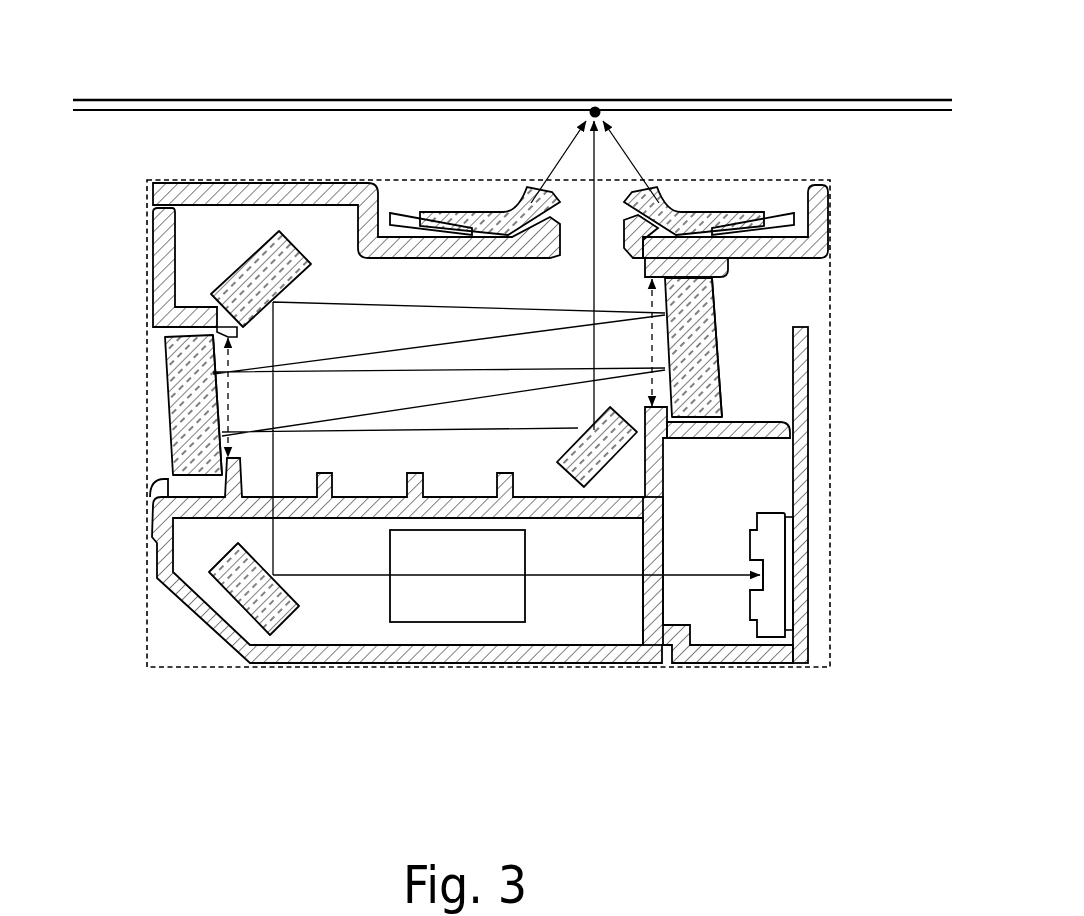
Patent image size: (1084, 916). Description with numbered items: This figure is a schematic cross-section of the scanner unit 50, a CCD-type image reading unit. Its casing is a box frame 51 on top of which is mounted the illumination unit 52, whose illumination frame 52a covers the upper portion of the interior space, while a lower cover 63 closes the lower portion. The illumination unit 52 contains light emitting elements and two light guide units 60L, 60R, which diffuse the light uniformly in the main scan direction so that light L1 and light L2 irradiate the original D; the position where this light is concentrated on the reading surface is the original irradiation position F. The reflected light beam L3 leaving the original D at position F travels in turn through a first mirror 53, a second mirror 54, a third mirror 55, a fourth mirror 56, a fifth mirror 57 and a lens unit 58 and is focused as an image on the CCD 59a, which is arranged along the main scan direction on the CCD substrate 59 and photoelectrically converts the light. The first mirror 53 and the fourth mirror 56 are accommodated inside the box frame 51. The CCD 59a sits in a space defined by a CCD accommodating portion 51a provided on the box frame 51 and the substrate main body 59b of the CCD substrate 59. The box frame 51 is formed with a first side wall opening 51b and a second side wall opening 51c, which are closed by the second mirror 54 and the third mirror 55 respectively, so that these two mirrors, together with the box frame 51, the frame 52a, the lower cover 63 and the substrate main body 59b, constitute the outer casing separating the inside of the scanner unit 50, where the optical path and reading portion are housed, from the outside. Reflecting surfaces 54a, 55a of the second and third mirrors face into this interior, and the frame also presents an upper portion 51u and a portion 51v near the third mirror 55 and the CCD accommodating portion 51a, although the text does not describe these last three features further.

The scanner unit 50 is at (824, 672).
The box frame 51 is at (146, 531).
The CCD accommodating portion 51a is at (664, 488).
The first side wall opening 51b is at (253, 397).
The second side wall opening 51c is at (628, 342).
The upper housing portion 51u is at (163, 481).
The shelf portion 51v is at (770, 421).
The illumination unit 52 is at (832, 208).
The illumination frame 52a is at (258, 188).
The first mirror 53 is at (613, 466).
The second mirror 54 is at (170, 417).
The lens surface 54a is at (170, 381).
The third mirror 55 is at (722, 388).
The lens surface 55a is at (722, 322).
The fourth mirror 56 is at (243, 262).
The fifth mirror 57 is at (237, 600).
The lens unit 58 is at (499, 627).
The CCD substrate 59 is at (814, 612).
The CCD 59a is at (772, 588).
The substrate main body 59b is at (808, 530).
The light guide unit 60L is at (484, 200).
The light guide unit 60R is at (702, 200).
The lower cover 63 is at (354, 656).
The original D is at (212, 100).
The original irradiation position F is at (596, 108).
The light L1 is at (558, 162).
The light L2 is at (632, 162).
The light beam L3 is at (575, 275).